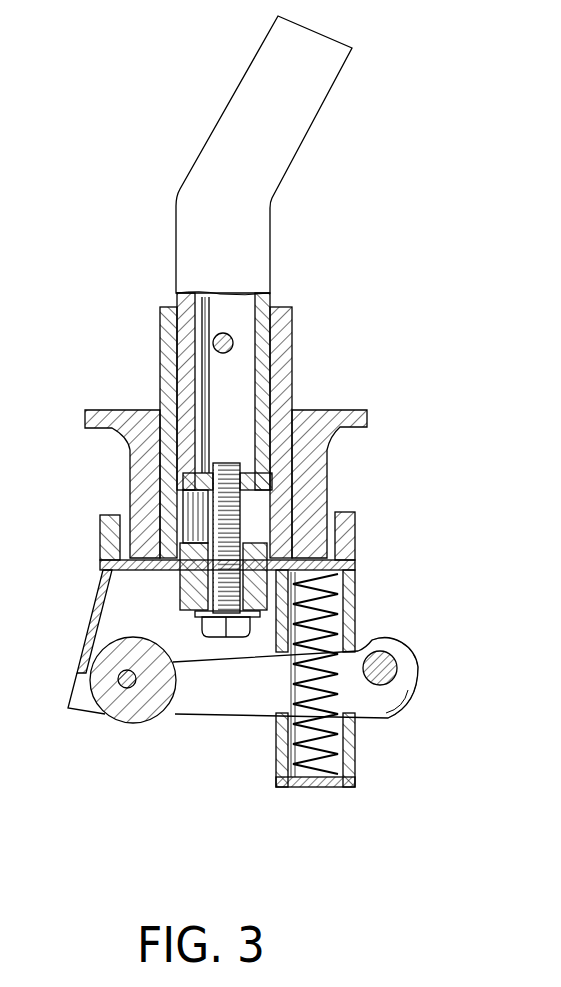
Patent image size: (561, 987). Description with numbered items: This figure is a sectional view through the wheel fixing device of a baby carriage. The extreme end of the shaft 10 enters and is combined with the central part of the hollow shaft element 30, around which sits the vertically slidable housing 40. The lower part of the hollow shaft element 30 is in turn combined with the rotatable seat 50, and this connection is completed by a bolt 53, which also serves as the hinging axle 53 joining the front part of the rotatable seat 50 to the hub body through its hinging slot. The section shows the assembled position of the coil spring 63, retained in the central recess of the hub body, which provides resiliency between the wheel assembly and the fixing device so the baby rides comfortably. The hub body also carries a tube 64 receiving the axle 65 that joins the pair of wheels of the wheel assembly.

The shaft 10 is at (293, 127).
The hollow shaft element 30 is at (280, 328).
The vertically slidable housing 40 is at (345, 415).
The rotatable seat 50 is at (90, 609).
The hinging axle 53 is at (235, 504).
The coil spring 63 is at (310, 787).
The tube 64 is at (383, 643).
The axle 65 is at (392, 665).